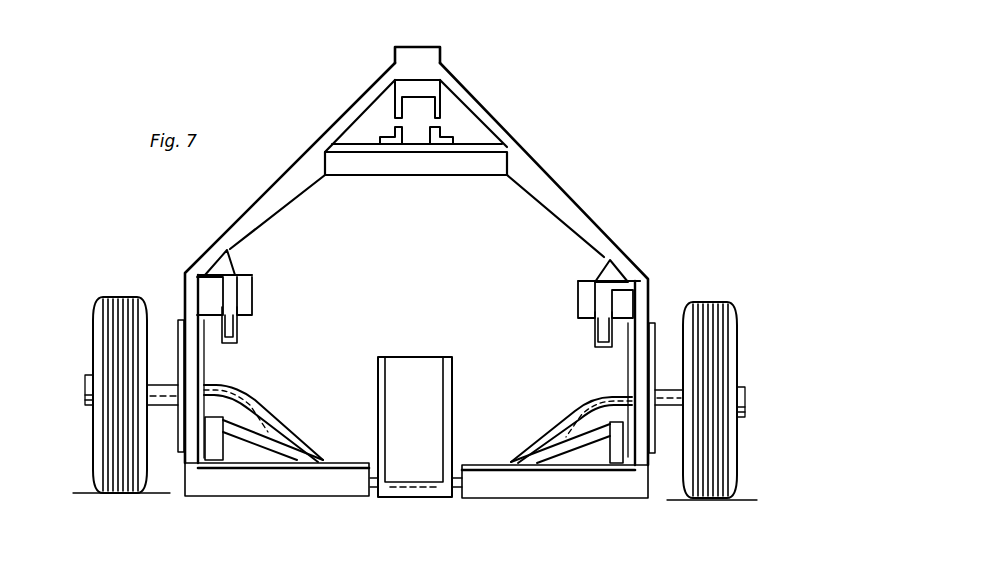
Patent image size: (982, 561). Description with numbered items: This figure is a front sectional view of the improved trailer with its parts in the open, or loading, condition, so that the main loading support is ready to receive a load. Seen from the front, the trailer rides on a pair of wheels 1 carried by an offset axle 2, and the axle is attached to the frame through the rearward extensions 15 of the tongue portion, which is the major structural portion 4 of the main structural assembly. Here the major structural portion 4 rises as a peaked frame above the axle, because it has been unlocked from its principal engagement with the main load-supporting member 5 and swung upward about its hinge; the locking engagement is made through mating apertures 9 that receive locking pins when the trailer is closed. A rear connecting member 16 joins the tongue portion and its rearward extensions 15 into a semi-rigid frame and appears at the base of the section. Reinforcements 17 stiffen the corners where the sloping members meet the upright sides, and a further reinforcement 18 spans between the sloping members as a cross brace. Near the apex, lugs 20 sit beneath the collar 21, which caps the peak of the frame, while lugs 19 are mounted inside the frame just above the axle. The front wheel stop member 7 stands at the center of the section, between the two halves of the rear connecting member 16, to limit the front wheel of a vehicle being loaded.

The wheels 1 is at (110, 362).
The offset axle 2 is at (254, 420).
The major structural portion 4 is at (291, 179).
The main load-supporting member 5 is at (417, 493).
The front wheel stop member 7 is at (393, 392).
The apertures 9 is at (216, 442).
The rearward extensions 15 is at (182, 362).
The rear connecting member 16 is at (284, 487).
The reinforcements 17 is at (242, 267).
The reinforcement 18 is at (460, 167).
The lugs 19 is at (415, 319).
The lugs 20 is at (382, 137).
The collar 21 is at (410, 58).